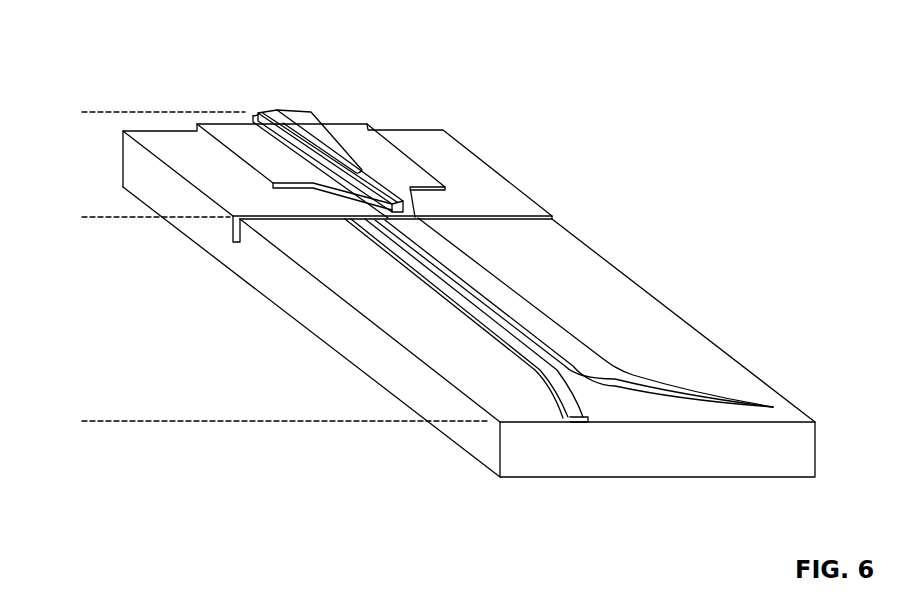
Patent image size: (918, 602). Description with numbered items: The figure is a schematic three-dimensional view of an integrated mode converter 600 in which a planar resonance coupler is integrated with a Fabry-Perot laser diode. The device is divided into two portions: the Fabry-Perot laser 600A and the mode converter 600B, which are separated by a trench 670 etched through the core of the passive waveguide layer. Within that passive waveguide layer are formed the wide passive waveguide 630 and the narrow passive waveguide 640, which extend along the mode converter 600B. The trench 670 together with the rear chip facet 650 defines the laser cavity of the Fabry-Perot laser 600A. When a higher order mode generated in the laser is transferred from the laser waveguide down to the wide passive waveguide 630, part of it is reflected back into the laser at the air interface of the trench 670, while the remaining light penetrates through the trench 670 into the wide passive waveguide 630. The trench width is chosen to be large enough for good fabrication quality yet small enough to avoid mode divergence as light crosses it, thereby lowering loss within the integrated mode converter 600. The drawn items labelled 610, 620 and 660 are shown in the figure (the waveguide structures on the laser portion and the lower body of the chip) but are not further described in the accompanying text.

The integrated mode converter 600 is at (738, 128).
The Fabry-Perot laser 600A is at (82, 112).
The mode converter 600B is at (82, 217).
The tapered waveguide core 610 is at (322, 127).
The waveguide cladding plate 620 is at (400, 182).
The wide passive waveguide 630 is at (467, 268).
The narrow passive waveguide 640 is at (425, 270).
The rear chip facet 650 is at (120, 152).
The substrate 660 is at (527, 461).
The trench 670 is at (552, 217).